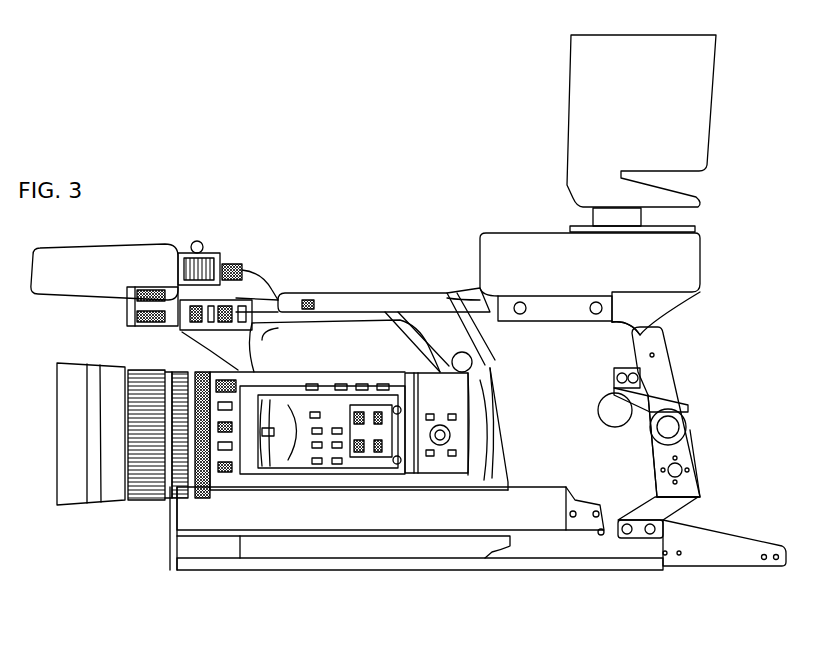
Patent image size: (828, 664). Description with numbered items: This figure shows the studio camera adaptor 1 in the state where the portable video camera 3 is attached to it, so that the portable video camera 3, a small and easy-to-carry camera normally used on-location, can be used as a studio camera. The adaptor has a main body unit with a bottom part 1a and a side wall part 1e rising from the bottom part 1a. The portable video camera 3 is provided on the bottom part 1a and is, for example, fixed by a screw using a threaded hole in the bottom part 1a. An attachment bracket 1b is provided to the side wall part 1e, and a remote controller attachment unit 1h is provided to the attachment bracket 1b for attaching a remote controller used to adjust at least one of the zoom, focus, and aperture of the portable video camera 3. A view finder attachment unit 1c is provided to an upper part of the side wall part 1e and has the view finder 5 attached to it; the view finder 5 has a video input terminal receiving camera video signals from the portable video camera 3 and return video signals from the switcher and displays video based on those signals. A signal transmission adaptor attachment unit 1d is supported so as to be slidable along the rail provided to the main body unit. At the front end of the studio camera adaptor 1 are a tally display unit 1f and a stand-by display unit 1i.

The studio camera adaptor 1 is at (495, 210).
The portable video camera 3 is at (292, 245).
The view finder 5 is at (698, 120).
The bottom part 1a is at (358, 568).
The attachment bracket 1b is at (688, 450).
The view finder attachment unit 1c is at (688, 255).
The signal transmission adaptor attachment unit 1d is at (658, 346).
The side wall part 1e is at (618, 336).
The tally display unit 1f is at (177, 536).
The remote controller attachment unit 1h is at (674, 425).
The stand-by display unit 1i is at (177, 536).